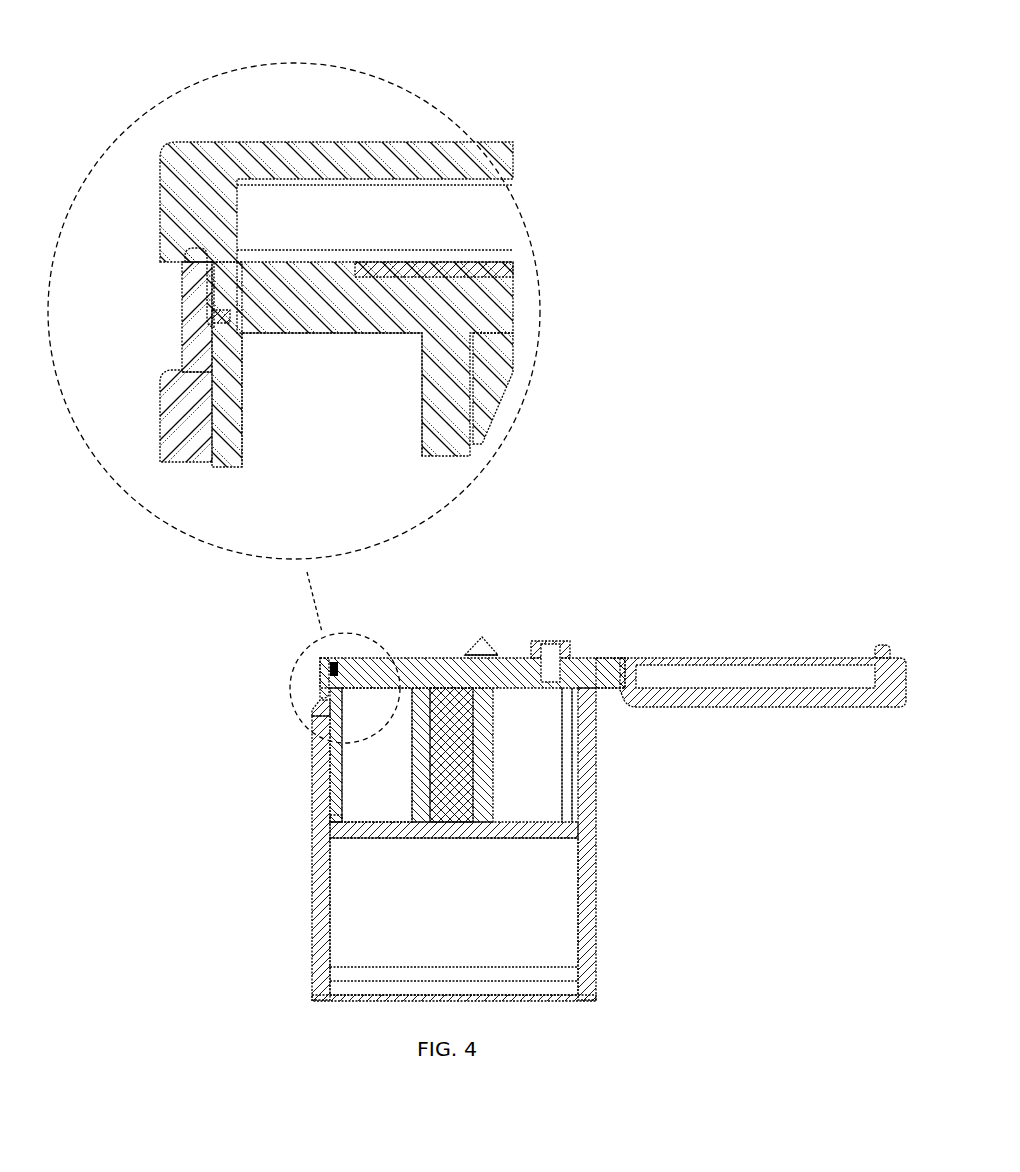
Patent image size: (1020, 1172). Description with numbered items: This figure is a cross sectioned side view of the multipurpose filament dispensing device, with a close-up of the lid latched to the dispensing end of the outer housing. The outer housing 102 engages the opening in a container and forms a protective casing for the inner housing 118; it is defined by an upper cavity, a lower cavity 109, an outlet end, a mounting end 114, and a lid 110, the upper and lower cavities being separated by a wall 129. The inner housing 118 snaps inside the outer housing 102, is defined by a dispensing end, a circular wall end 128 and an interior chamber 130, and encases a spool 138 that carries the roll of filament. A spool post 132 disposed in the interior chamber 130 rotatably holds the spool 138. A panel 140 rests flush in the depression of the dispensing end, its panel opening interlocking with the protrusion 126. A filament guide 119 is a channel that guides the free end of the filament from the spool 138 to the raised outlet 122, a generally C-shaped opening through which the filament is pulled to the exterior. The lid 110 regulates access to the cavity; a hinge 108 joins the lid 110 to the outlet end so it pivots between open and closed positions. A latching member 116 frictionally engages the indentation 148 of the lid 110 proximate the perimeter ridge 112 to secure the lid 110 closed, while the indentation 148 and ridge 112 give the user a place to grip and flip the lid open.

The outer housing 102 is at (198, 434).
The hinge 108 is at (609, 660).
The lower cavity 109 is at (456, 916).
The lid 110 is at (416, 161).
The perimeter ridge 112 is at (182, 362).
The mounting end 114 is at (586, 1000).
The latching member 116 is at (218, 290).
The inner housing 118 is at (228, 376).
The filament guide 119 is at (573, 760).
The raised outlet 122 is at (548, 645).
The protrusion 126 is at (480, 640).
The circular wall end 128 is at (335, 820).
The wall 129 is at (548, 830).
The interior chamber 130 is at (386, 783).
The spool post 132 is at (446, 762).
The spool 138 is at (488, 735).
The panel 140 is at (484, 270).
The indentation 148 is at (222, 318).